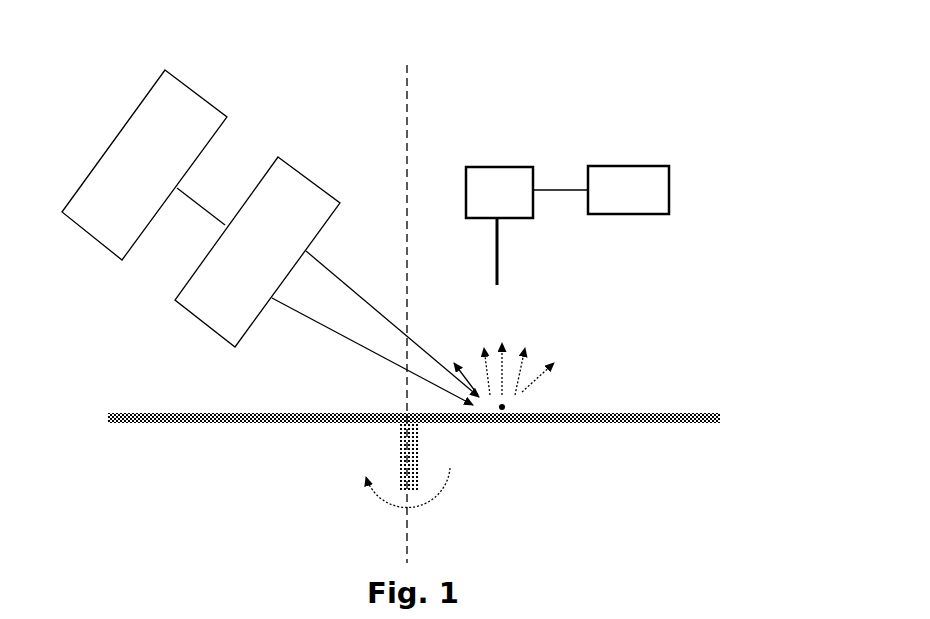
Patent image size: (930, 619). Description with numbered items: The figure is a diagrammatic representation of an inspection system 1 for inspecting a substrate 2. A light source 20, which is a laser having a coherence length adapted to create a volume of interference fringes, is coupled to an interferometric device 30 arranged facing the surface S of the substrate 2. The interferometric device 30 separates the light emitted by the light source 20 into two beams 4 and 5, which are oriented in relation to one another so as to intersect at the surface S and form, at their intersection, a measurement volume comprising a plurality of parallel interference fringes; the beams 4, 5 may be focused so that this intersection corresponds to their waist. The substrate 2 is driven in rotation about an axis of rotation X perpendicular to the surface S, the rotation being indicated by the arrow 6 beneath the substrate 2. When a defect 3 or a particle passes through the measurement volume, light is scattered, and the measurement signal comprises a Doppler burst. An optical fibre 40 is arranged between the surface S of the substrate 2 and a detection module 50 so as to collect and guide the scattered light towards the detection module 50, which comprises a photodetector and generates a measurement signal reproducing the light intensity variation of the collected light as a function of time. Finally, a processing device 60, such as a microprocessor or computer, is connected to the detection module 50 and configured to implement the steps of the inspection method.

The inspection system 1 is at (631, 84).
The substrate 2 is at (688, 410).
The defect 3 is at (517, 406).
The beam 4 is at (383, 320).
The beam 5 is at (340, 337).
The rotation of substrate 6 is at (414, 479).
The light source 20 is at (132, 226).
The interferometric device 30 is at (313, 210).
The optical fibre 40 is at (527, 305).
The detection module 50 is at (482, 177).
The processing device 60 is at (647, 175).
The axis of rotation X is at (408, 98).
The surface S is at (125, 412).